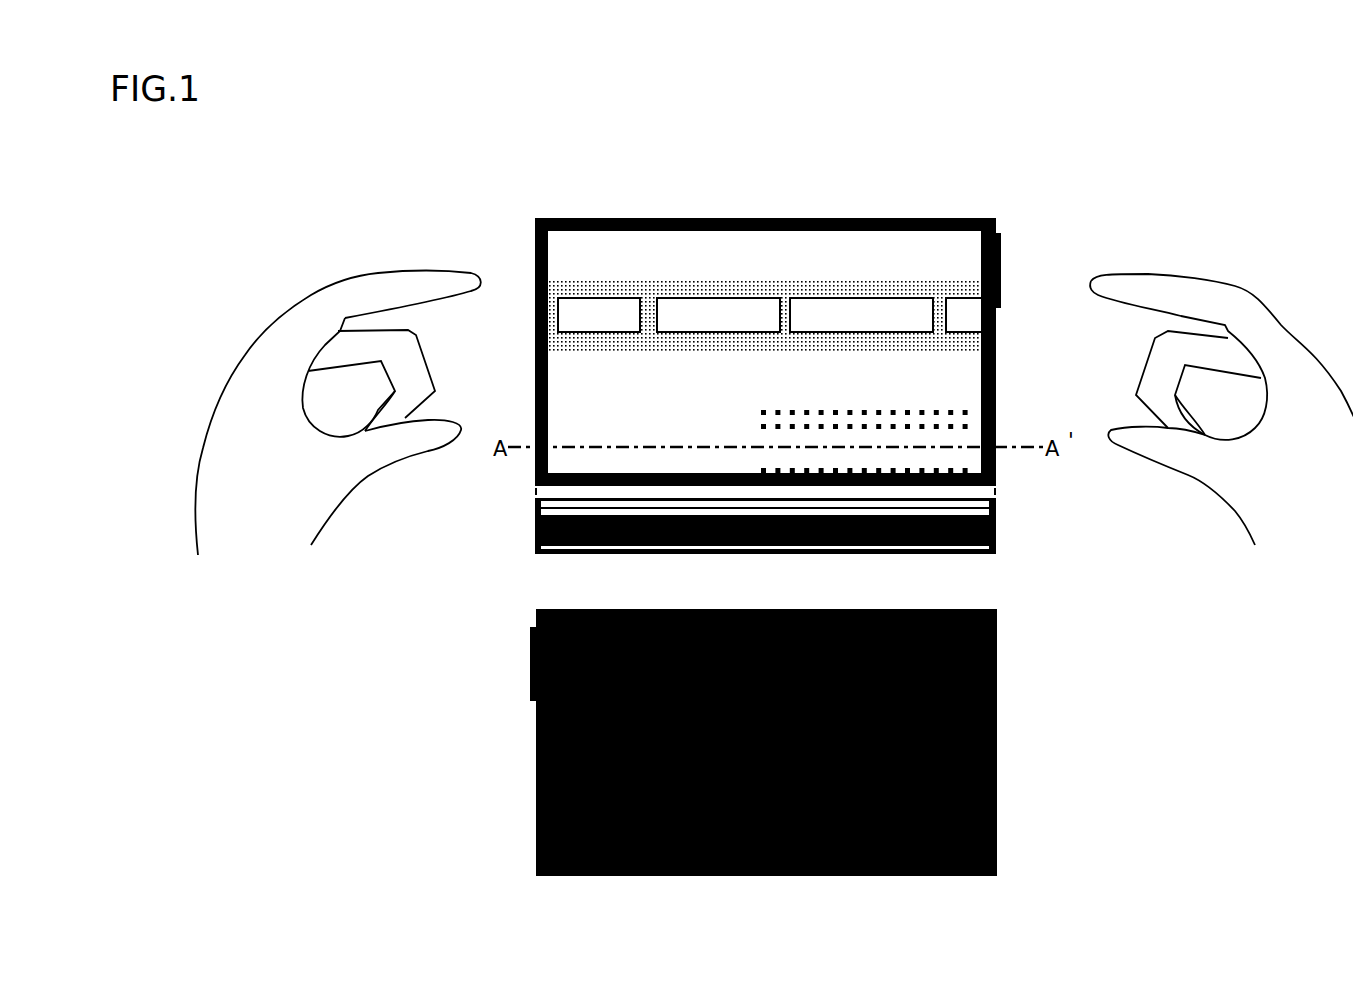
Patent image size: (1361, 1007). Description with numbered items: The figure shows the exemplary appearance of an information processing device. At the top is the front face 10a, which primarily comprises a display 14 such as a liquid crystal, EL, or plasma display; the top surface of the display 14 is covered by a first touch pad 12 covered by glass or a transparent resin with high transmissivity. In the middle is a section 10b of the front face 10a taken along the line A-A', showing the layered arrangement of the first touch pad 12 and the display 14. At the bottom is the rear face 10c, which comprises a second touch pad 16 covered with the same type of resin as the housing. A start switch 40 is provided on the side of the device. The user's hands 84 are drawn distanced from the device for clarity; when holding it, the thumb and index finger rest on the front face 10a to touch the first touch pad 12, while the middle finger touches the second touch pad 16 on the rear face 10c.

The front face 10a is at (557, 210).
The section 10b is at (527, 523).
The rear face 10c is at (527, 830).
The first touch pad 12 is at (947, 358).
The display 14 is at (947, 390).
The second touch pad 16 is at (960, 540).
The start switch 40 is at (990, 273).
The hands 84 is at (389, 279).